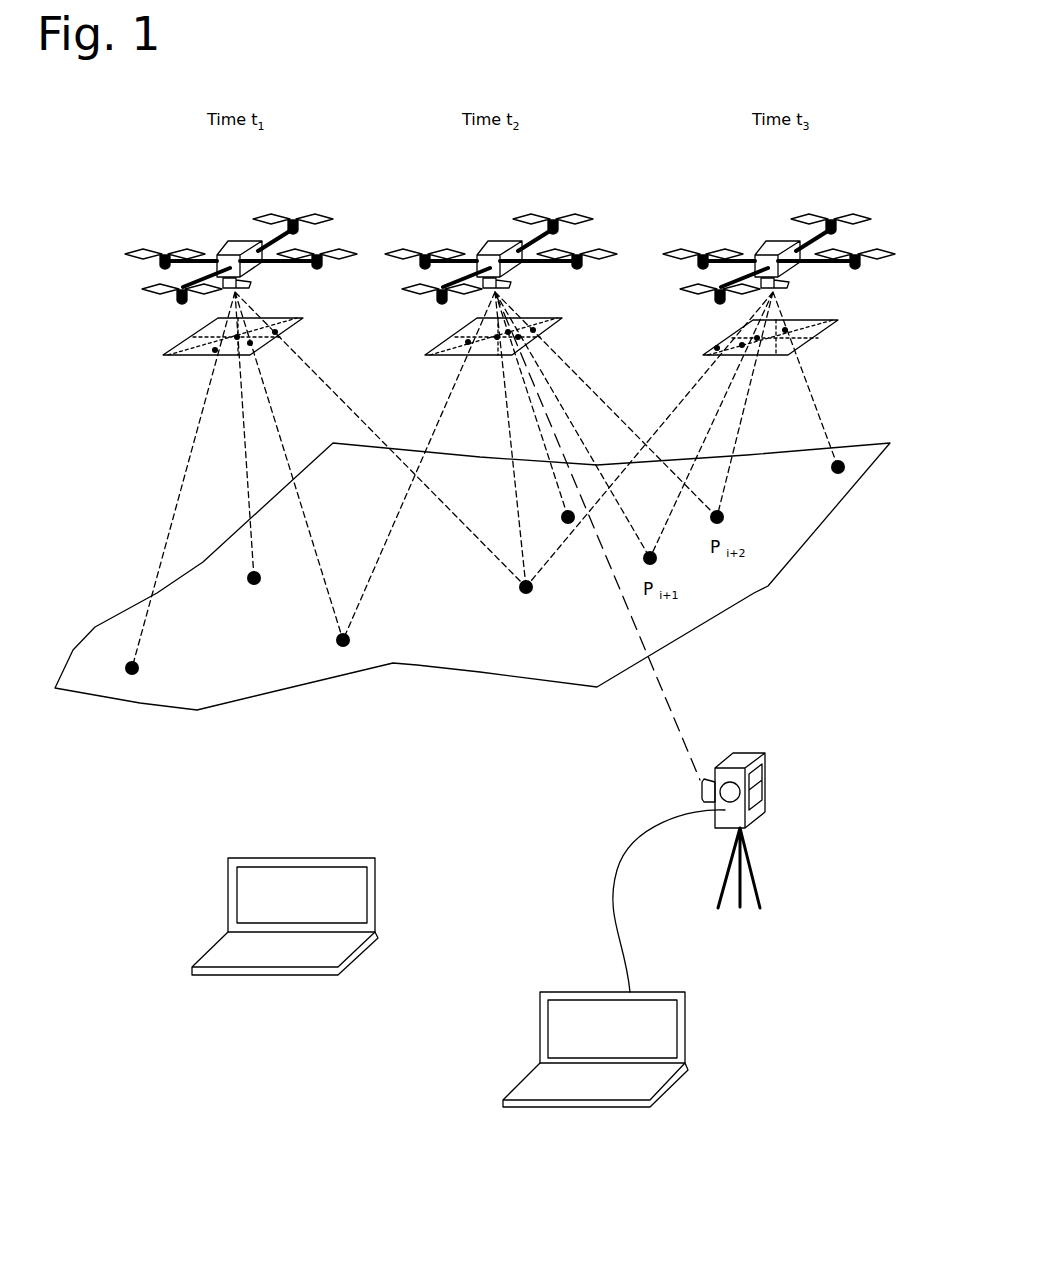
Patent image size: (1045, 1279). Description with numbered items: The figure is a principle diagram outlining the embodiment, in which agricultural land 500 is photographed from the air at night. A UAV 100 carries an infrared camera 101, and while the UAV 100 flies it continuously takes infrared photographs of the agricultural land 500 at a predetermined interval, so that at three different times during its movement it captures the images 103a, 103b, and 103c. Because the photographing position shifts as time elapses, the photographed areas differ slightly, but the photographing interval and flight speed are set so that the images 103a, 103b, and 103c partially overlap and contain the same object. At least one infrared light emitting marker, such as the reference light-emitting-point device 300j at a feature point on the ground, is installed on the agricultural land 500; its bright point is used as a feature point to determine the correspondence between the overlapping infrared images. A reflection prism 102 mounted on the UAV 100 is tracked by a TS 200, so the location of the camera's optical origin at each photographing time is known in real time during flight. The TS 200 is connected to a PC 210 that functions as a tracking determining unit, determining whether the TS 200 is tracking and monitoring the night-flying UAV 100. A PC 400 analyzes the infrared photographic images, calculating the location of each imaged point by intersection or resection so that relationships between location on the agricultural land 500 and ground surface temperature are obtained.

The UAV 100 is at (241, 226).
The infrared camera 101 is at (223, 285).
The reflection prism 102 is at (253, 283).
The image 103a is at (200, 353).
The image 103b is at (437, 356).
The image 103c is at (807, 338).
The TS 200 is at (763, 812).
The PC 210 is at (677, 1083).
The reference light-emitting-point device 300j is at (526, 590).
The PC 400 is at (285, 975).
The agricultural land 500 is at (280, 681).